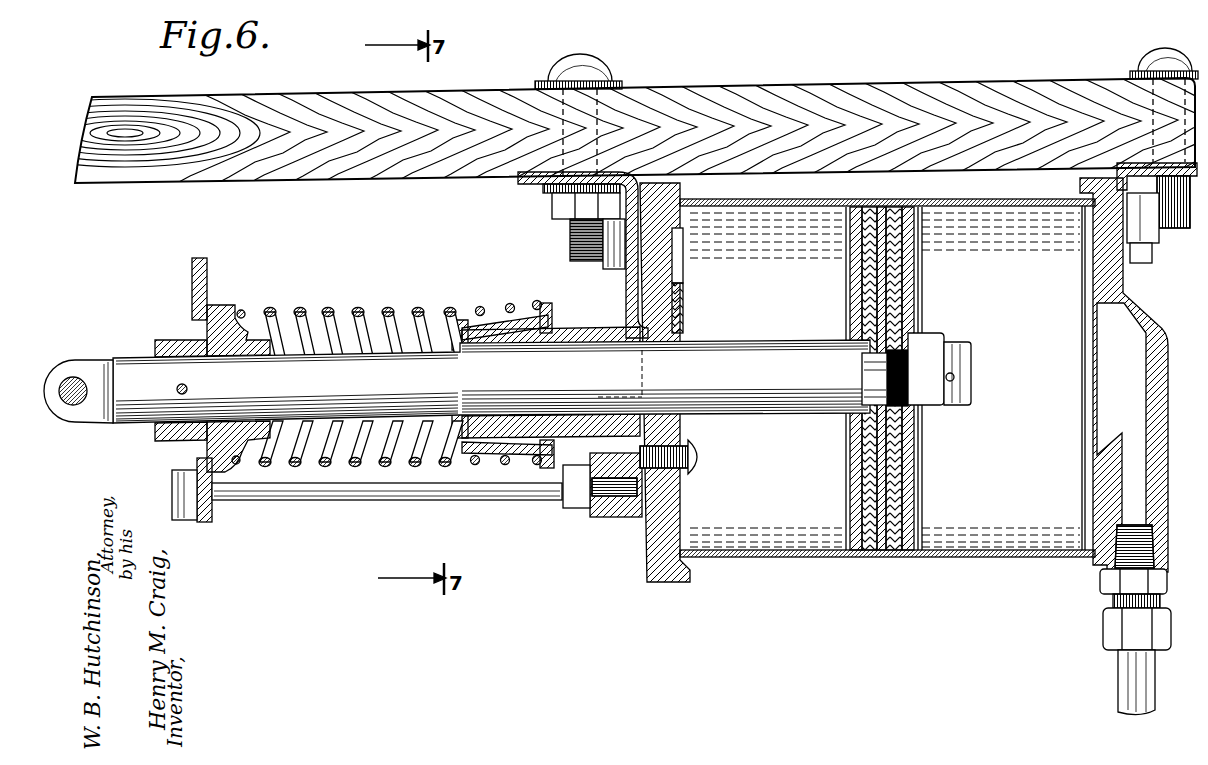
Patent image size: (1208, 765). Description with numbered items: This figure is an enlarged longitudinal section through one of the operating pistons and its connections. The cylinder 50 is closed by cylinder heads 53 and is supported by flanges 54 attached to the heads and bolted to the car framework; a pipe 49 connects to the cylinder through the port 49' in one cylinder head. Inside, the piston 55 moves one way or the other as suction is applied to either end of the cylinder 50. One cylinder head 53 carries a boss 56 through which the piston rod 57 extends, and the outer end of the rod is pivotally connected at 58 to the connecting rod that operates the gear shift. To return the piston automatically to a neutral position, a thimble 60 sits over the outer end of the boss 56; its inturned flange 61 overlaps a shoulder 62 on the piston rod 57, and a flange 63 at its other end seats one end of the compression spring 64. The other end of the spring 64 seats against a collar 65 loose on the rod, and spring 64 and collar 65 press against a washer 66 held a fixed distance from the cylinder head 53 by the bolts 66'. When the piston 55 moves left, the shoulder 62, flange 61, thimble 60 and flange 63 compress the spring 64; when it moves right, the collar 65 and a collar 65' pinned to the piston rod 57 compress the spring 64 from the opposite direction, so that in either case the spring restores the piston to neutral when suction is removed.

The pipe 49 is at (1145, 620).
The port 49' is at (1088, 458).
The cylinder 50 is at (971, 557).
The cylinder head 53 is at (650, 540).
The flange 54 is at (548, 182).
The piston 55 is at (852, 532).
The boss 56 is at (588, 330).
The piston rod 57 is at (729, 352).
The pivotal connection 58 is at (78, 386).
The thimble 60 is at (496, 318).
The inturned flange 61 is at (452, 338).
The shoulder 62 is at (468, 345).
The flange 63 is at (545, 305).
The compression spring 64 is at (358, 308).
The collar 65 is at (248, 370).
The collar 65' is at (164, 404).
The washer 66 is at (223, 386).
The bolts 66' is at (381, 501).